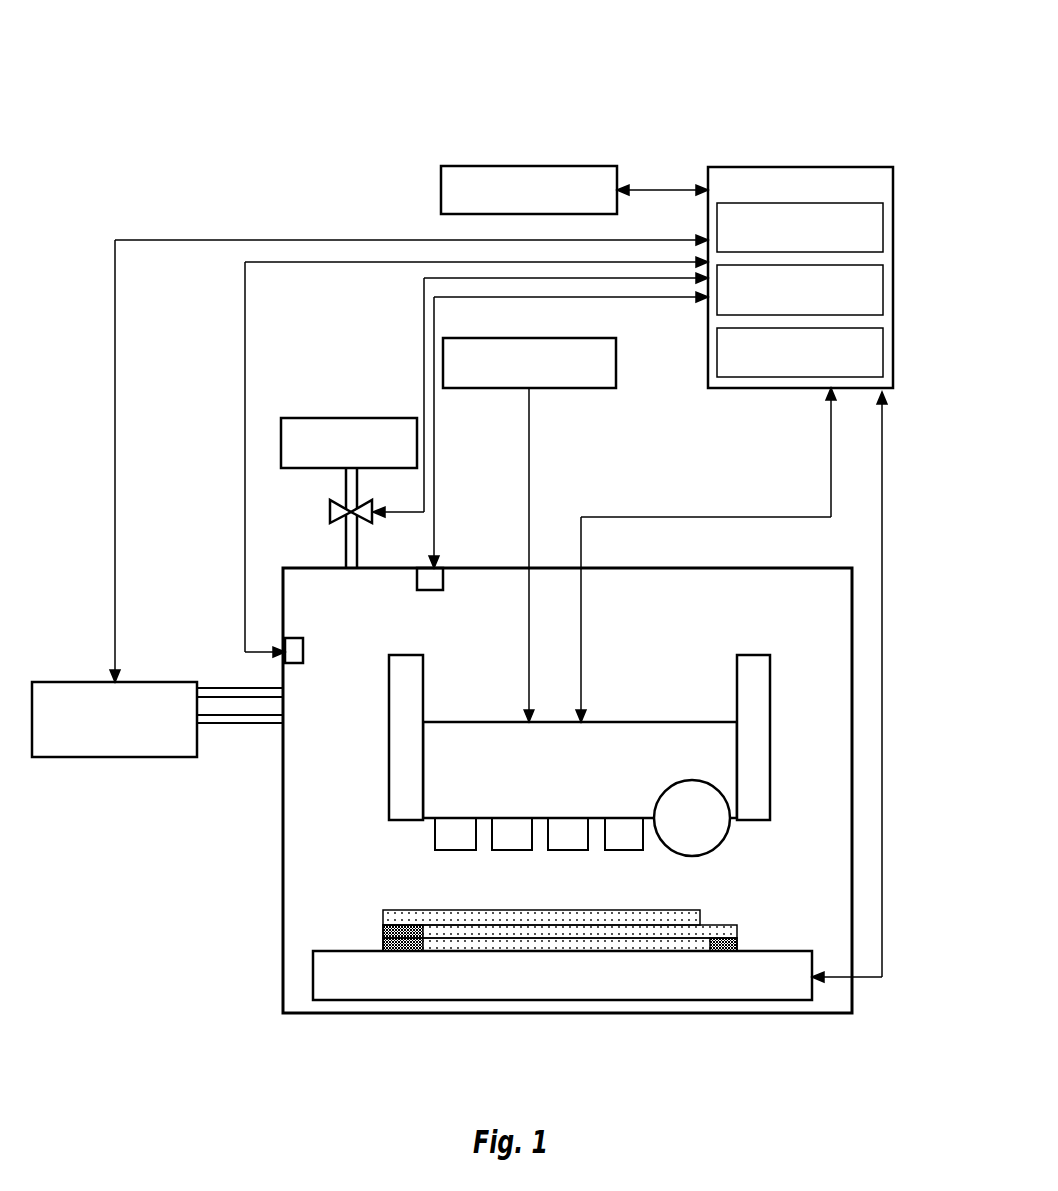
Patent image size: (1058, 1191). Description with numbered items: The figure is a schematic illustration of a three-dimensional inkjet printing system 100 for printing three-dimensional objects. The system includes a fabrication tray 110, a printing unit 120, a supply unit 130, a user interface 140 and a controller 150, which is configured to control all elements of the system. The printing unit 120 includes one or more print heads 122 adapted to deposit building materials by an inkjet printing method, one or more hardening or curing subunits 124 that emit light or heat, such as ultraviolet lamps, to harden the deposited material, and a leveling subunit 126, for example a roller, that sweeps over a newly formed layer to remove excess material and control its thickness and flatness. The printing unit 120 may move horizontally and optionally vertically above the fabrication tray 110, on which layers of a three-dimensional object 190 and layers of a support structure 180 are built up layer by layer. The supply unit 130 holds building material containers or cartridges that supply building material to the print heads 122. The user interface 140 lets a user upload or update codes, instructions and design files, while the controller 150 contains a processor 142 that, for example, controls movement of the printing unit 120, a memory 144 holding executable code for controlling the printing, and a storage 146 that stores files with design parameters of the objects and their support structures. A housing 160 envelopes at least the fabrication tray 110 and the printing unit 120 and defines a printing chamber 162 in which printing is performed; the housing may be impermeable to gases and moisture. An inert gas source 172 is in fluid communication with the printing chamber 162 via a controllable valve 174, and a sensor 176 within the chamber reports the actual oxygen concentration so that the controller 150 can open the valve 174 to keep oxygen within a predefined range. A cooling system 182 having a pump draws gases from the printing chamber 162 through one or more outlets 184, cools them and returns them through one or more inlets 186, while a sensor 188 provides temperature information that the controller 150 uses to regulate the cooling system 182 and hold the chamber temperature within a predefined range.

The 3D inkjet printing system 100 is at (115, 41).
The fabrication tray 110 is at (345, 950).
The printing unit 120 is at (370, 645).
The print heads 122 is at (605, 851).
The hardening or curing subunits 124 is at (423, 672).
The leveling subunit 126 is at (665, 852).
The supply unit 130 is at (530, 338).
The user interface 140 is at (516, 166).
The processor 142 is at (883, 229).
The memory 144 is at (883, 293).
The storage 146 is at (883, 355).
The controller 150 is at (786, 167).
The housing 160 is at (773, 567).
The printing chamber 162 is at (637, 600).
The inert gas source 172 is at (310, 418).
The controllable valve 174 is at (330, 518).
The sensor 176 is at (437, 572).
The support structure 180 is at (737, 938).
The cooling system 182 is at (98, 682).
The outlets 184 is at (286, 692).
The inlets 186 is at (286, 723).
The sensor 188 is at (303, 646).
The 3D object 190 is at (700, 912).